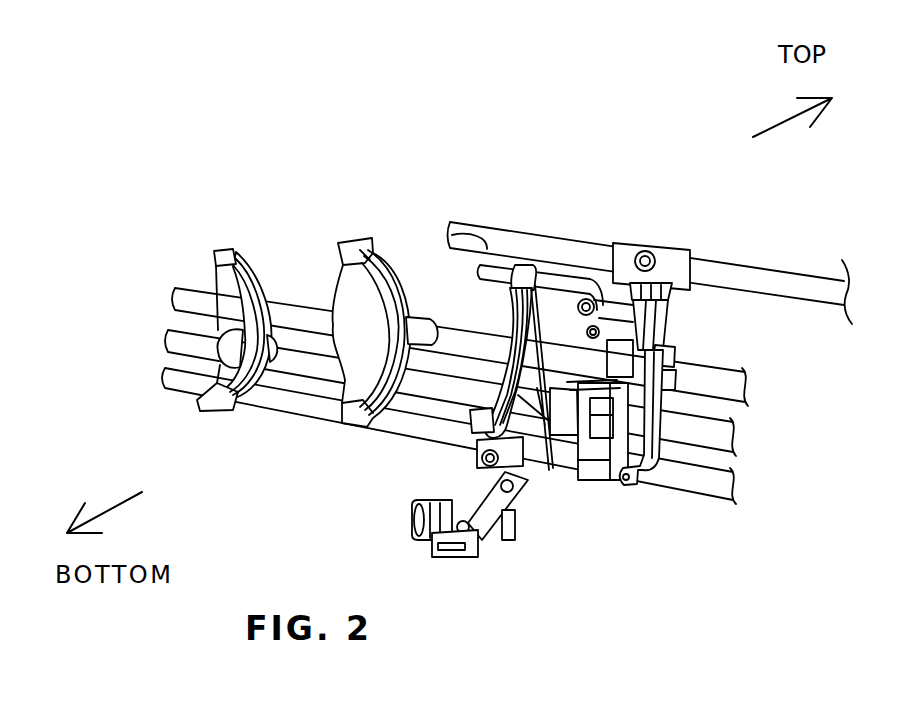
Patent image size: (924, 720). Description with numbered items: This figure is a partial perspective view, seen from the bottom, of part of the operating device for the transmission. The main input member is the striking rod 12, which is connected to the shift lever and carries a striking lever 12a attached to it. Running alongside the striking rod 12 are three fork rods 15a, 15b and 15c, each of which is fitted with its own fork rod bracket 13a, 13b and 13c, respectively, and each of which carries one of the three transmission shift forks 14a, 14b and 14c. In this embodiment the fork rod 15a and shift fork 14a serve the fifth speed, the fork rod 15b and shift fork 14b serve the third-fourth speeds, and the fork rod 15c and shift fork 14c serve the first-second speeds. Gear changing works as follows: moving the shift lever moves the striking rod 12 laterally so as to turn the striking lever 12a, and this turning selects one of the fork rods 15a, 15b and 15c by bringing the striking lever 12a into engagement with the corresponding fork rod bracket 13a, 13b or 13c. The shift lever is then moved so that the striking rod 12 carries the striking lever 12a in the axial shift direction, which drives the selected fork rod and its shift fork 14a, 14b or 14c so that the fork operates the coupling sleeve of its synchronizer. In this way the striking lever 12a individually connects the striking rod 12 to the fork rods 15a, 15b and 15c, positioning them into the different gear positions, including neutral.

The striking rod 12 is at (788, 284).
The striking lever 12a is at (683, 353).
The fork rod bracket 13a is at (655, 385).
The fork rod bracket 13b is at (665, 362).
The fork rod bracket 13c is at (672, 352).
The shift fork 14a is at (505, 398).
The shift fork 14b is at (250, 387).
The shift fork 14c is at (363, 240).
The fork rod 15a is at (168, 380).
The fork rod 15b is at (185, 343).
The fork rod 15c is at (192, 298).